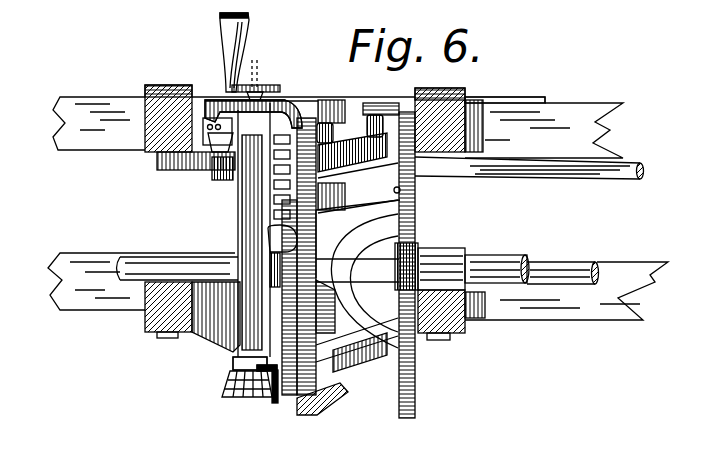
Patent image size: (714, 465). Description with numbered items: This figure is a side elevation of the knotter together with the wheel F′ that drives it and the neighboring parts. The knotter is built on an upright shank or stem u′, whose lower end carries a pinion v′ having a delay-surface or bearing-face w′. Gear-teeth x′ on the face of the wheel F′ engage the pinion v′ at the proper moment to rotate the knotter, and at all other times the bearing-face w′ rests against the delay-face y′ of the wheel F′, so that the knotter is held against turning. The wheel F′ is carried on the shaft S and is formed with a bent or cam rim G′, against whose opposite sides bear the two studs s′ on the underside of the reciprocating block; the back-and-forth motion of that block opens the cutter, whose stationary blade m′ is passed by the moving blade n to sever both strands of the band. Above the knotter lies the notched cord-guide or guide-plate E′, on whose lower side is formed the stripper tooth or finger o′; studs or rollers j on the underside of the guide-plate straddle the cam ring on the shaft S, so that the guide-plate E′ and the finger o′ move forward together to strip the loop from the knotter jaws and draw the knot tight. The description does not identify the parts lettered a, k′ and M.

The stationary blade m' is at (242, 70).
The pivot pin a is at (256, 79).
The cord-guide E' is at (421, 184).
The stripper tooth or finger o' is at (253, 114).
The moving blade n is at (228, 133).
The upright shank or stem u' is at (255, 237).
The gear-teeth x' is at (283, 177).
The studs s' is at (350, 130).
The studs or rollers j is at (352, 152).
The cam bracket k' is at (358, 274).
The upper shaft M is at (556, 183).
The shaft S is at (177, 259).
The delay-face y' is at (298, 256).
The delay-surface or bearing-face w' is at (256, 352).
The pinion v' is at (236, 384).
The wheel F' is at (255, 393).
The bent or cam rim G' is at (328, 399).